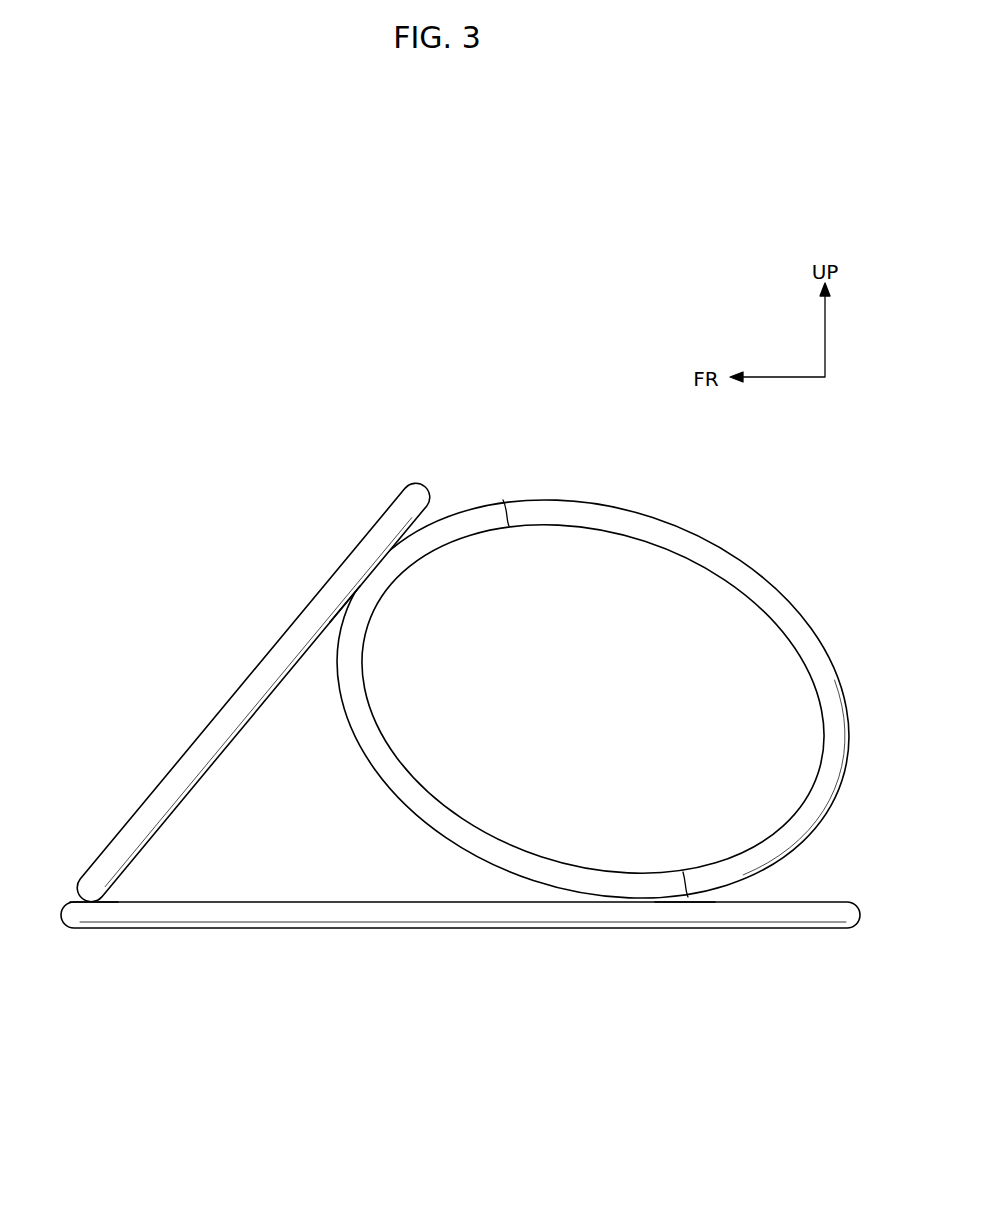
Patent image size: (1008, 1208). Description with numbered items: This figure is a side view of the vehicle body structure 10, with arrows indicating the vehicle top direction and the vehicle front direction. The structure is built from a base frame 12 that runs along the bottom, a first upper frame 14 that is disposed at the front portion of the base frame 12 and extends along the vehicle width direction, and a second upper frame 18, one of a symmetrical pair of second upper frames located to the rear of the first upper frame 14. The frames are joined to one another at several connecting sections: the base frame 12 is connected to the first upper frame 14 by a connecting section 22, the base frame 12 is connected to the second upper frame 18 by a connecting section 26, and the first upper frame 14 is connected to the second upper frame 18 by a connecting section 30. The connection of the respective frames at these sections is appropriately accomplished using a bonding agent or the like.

The vehicle body structure 10 is at (455, 421).
The base frame 12 is at (470, 929).
The first upper frame 14 is at (232, 702).
The second upper frame 18 is at (598, 501).
The connecting section 22 is at (97, 913).
The connecting section 26 is at (655, 911).
The connecting section 30 is at (344, 580).